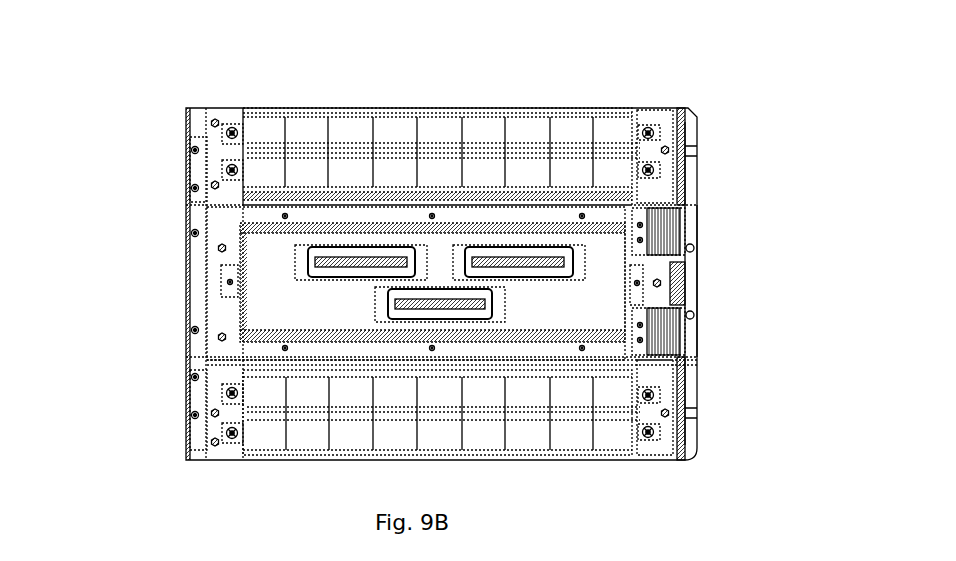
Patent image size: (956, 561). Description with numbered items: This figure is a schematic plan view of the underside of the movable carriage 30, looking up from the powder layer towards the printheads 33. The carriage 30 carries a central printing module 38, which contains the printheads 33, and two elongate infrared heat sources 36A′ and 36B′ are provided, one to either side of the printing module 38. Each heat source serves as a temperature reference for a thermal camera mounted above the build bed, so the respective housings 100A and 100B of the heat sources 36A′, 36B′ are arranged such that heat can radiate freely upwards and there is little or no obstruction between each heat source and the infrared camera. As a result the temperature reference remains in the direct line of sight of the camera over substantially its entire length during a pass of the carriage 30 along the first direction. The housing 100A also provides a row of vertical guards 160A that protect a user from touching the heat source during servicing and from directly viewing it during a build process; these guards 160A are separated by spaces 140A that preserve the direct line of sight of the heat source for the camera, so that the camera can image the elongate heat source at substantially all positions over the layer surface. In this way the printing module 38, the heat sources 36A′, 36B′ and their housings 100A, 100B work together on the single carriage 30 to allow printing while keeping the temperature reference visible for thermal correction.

The carriage 30 is at (168, 86).
The printing module 38 is at (188, 278).
The elongate infrared heat source 36A′ is at (270, 143).
The elongate infrared heat source 36B′ is at (318, 407).
The spaces 140A is at (345, 132).
The vertical guards 160A is at (468, 125).
The housing 100A is at (700, 160).
The housing 100B is at (700, 418).
The printheads 33 is at (578, 266).